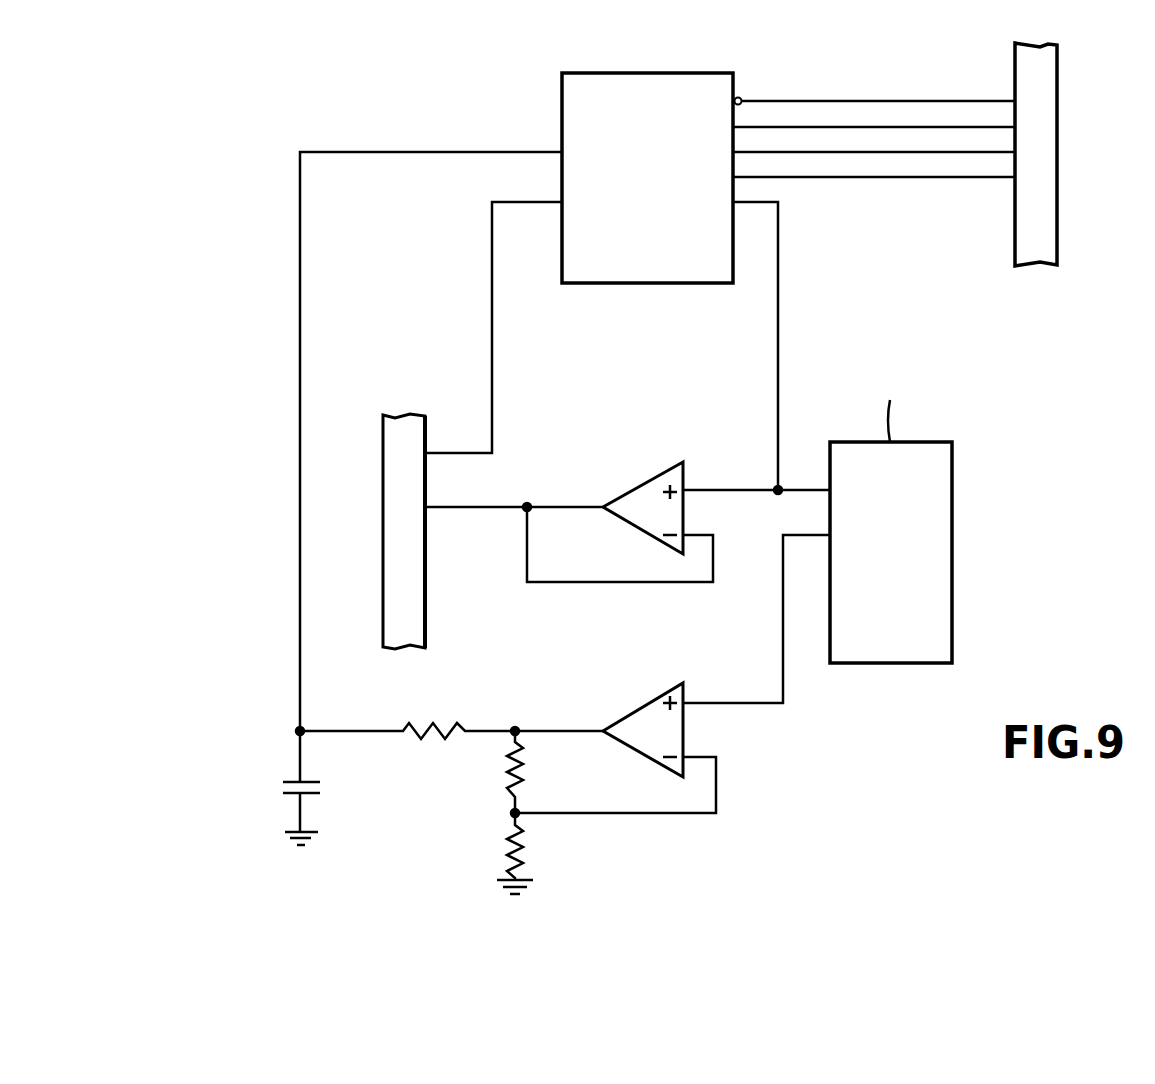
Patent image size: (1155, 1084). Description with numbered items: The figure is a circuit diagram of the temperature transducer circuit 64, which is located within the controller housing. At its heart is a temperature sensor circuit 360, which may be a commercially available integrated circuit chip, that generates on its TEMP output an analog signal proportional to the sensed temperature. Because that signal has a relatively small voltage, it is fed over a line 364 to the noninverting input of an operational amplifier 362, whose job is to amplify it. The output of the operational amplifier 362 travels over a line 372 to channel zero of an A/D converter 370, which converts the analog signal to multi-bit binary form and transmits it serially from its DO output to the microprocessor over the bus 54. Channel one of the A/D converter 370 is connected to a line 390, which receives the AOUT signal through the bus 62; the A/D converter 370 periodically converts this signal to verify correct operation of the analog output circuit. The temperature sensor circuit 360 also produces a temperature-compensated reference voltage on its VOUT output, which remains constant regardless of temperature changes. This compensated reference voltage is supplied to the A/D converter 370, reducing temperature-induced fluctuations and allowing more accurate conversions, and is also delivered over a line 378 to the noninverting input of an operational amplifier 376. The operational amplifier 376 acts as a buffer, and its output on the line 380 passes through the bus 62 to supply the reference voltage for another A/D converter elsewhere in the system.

The temperature transducer circuit 64 is at (250, 210).
The A/D converter 370 is at (697, 73).
The bus 54 is at (1060, 163).
The line 372 is at (300, 370).
The line 390 is at (494, 362).
The line 378 is at (779, 333).
The operational amplifier 376 is at (645, 482).
The line 380 is at (513, 504).
The bus 62 is at (425, 600).
The temperature sensor circuit 360 is at (953, 527).
The operational amplifier 362 is at (650, 700).
The line 364 is at (740, 703).